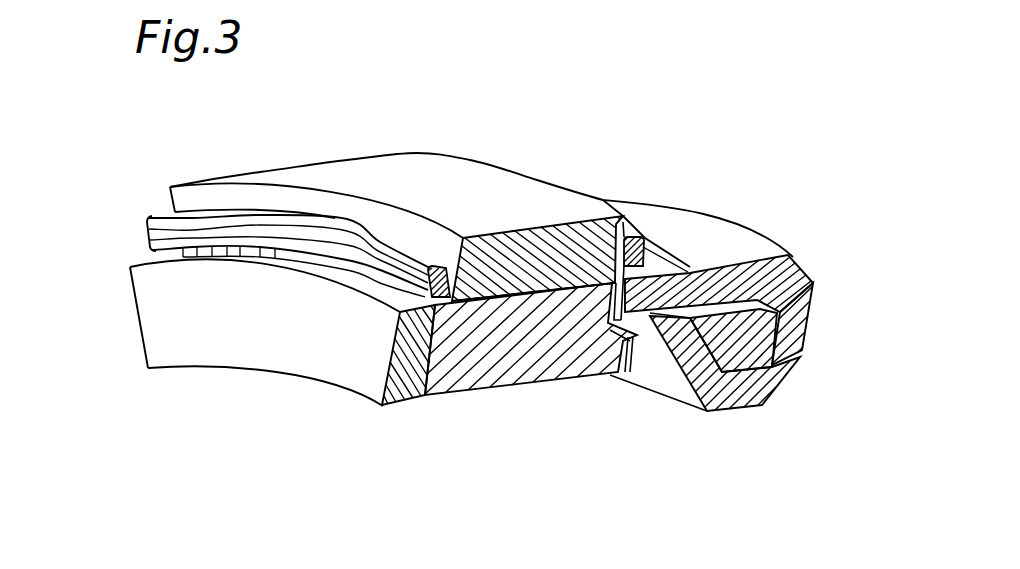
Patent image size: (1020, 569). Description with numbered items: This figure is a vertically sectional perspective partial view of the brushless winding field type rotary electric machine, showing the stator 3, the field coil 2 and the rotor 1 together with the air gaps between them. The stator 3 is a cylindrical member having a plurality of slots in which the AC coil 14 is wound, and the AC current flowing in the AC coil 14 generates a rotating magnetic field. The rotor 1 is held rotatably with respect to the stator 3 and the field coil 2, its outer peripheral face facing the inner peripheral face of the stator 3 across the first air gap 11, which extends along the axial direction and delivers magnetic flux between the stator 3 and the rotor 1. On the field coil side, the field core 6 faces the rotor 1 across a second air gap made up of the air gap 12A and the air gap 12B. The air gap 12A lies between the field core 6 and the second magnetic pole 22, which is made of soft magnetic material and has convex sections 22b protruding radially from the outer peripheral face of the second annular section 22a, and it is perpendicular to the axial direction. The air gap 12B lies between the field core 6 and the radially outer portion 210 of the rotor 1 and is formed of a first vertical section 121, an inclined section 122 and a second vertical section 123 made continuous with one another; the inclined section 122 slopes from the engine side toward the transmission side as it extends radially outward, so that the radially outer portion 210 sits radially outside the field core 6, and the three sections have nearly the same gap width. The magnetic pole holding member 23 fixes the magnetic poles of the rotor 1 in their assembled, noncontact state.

The rotor 1 is at (250, 418).
The field coil 2 is at (762, 348).
The stator 3 is at (420, 173).
The field core 6 is at (815, 315).
The first air gap 11 is at (556, 287).
The air gap 12A is at (618, 362).
The air gap 12B is at (684, 268).
The AC coil 14 is at (150, 233).
The first vertical section 121 is at (665, 383).
The inclined section 122 is at (695, 270).
The second vertical section 123 is at (699, 275).
The radially outer portion 210 is at (662, 287).
The second magnetic pole 22 is at (545, 388).
The second annular section 22a is at (450, 398).
The convex section 22b is at (490, 372).
The magnetic pole holding member 23 is at (207, 345).